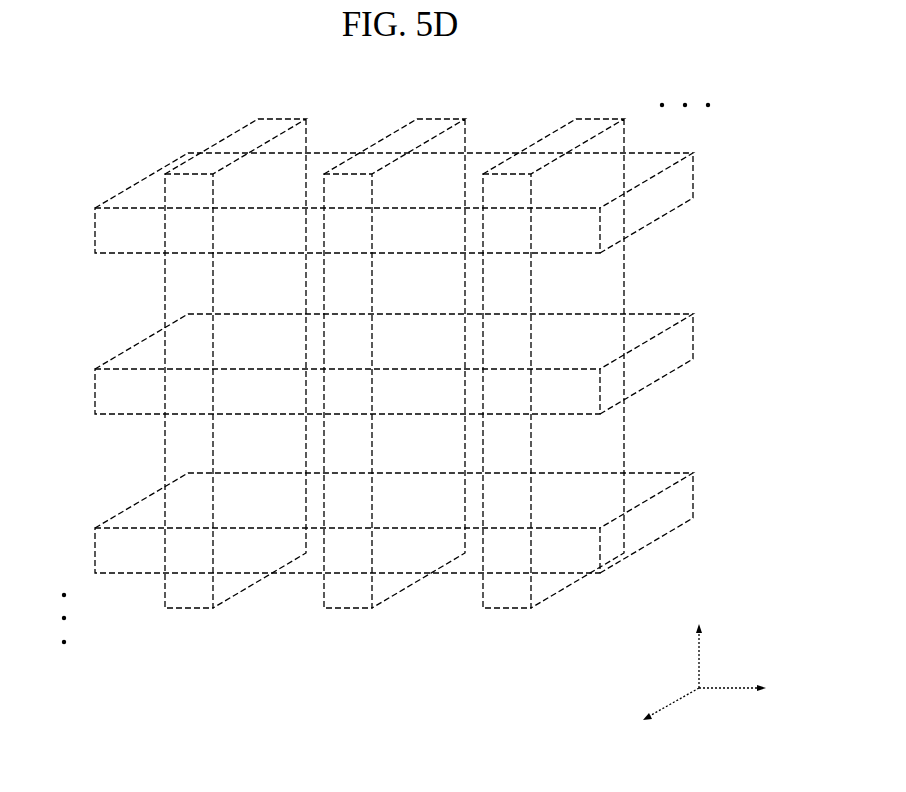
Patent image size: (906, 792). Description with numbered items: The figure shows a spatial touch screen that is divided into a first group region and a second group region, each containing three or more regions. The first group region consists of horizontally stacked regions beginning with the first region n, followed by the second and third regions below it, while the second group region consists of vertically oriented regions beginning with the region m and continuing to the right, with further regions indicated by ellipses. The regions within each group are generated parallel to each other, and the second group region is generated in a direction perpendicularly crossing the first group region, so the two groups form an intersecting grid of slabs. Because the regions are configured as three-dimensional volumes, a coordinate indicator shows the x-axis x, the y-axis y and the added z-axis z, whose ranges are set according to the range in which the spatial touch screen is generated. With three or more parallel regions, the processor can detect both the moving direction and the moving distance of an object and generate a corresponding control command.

The region of second group region m is at (235, 347).
The first region of first group region n is at (374, 203).
The x-axis x is at (741, 685).
The y-axis y is at (700, 641).
The z-axis z is at (663, 712).